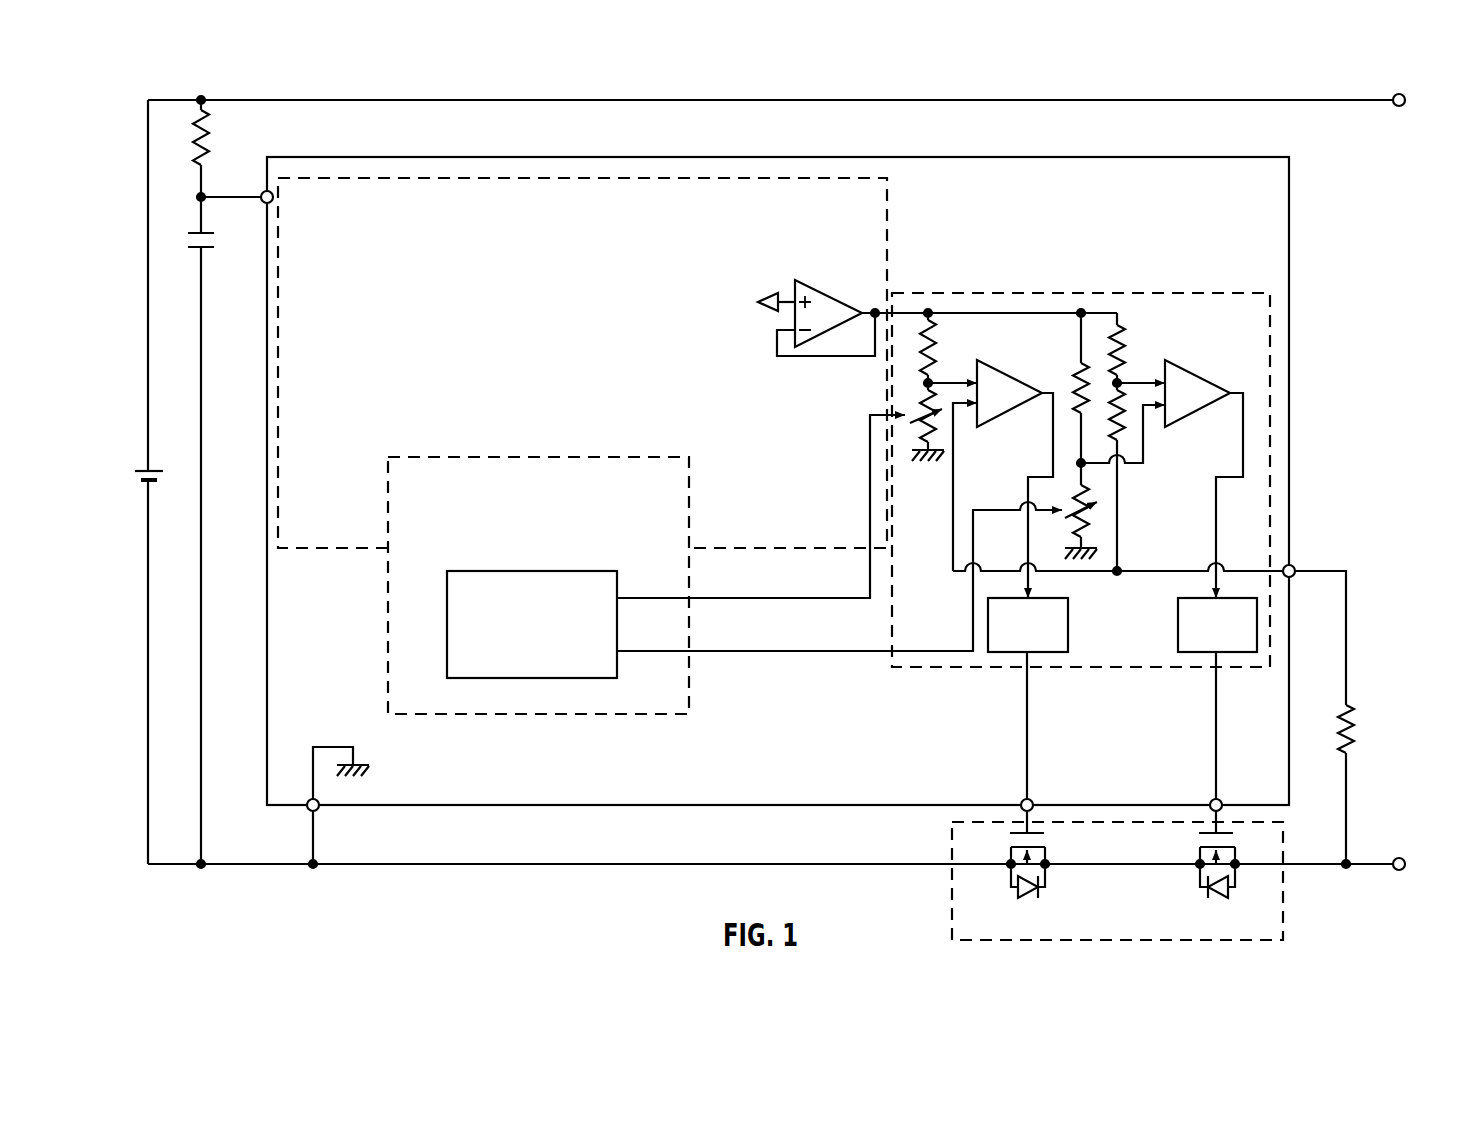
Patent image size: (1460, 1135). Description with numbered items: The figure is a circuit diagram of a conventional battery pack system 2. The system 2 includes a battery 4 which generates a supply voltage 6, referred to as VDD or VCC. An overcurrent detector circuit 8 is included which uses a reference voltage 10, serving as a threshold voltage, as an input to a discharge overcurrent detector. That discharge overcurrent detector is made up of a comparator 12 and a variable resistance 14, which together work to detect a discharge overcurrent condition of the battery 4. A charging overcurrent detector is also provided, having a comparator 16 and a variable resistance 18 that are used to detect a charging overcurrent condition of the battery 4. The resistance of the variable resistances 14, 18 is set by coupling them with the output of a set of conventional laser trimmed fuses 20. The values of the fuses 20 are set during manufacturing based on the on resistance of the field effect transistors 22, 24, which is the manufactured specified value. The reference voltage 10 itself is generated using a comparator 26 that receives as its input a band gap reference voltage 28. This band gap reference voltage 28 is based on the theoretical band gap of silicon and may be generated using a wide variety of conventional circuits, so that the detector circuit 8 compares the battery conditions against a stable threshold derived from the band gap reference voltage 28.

The battery pack system 2 is at (128, 86).
The battery 4 is at (152, 469).
The supply voltage 6 is at (233, 158).
The overcurrent detector circuit 8 is at (1278, 338).
The reference voltage 10 is at (907, 312).
The comparator 12 is at (1010, 412).
The variable resistance 14 is at (922, 403).
The comparator 16 is at (1203, 378).
The variable resistance 18 is at (1093, 523).
The laser trimmed fuses 20 is at (485, 571).
The field effect transistor 22 is at (1047, 855).
The field effect transistor 24 is at (1197, 855).
The comparator 26 is at (827, 293).
The band gap reference voltage 28 is at (762, 305).